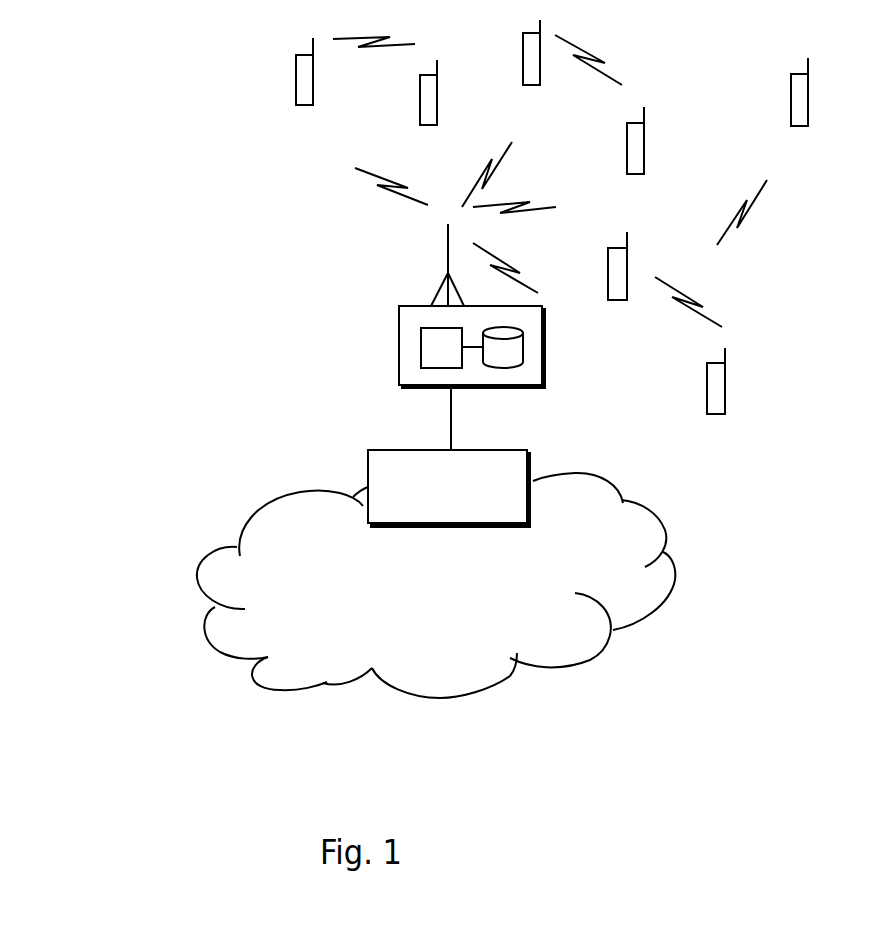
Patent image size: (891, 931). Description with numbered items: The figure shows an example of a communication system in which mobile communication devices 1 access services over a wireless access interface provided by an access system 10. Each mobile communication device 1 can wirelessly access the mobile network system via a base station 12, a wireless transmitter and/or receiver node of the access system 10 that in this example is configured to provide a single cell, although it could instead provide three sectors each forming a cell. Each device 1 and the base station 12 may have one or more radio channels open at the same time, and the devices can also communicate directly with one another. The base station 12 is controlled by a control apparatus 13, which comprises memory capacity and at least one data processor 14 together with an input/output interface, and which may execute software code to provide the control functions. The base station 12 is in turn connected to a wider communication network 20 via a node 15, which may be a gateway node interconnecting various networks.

The mobile communication device 1 is at (808, 110).
The access system 10 is at (268, 241).
The base station 12 is at (445, 268).
The control apparatus 13 is at (398, 328).
The data processor 14 is at (421, 347).
The node 15 is at (368, 470).
The communication network 20 is at (267, 529).